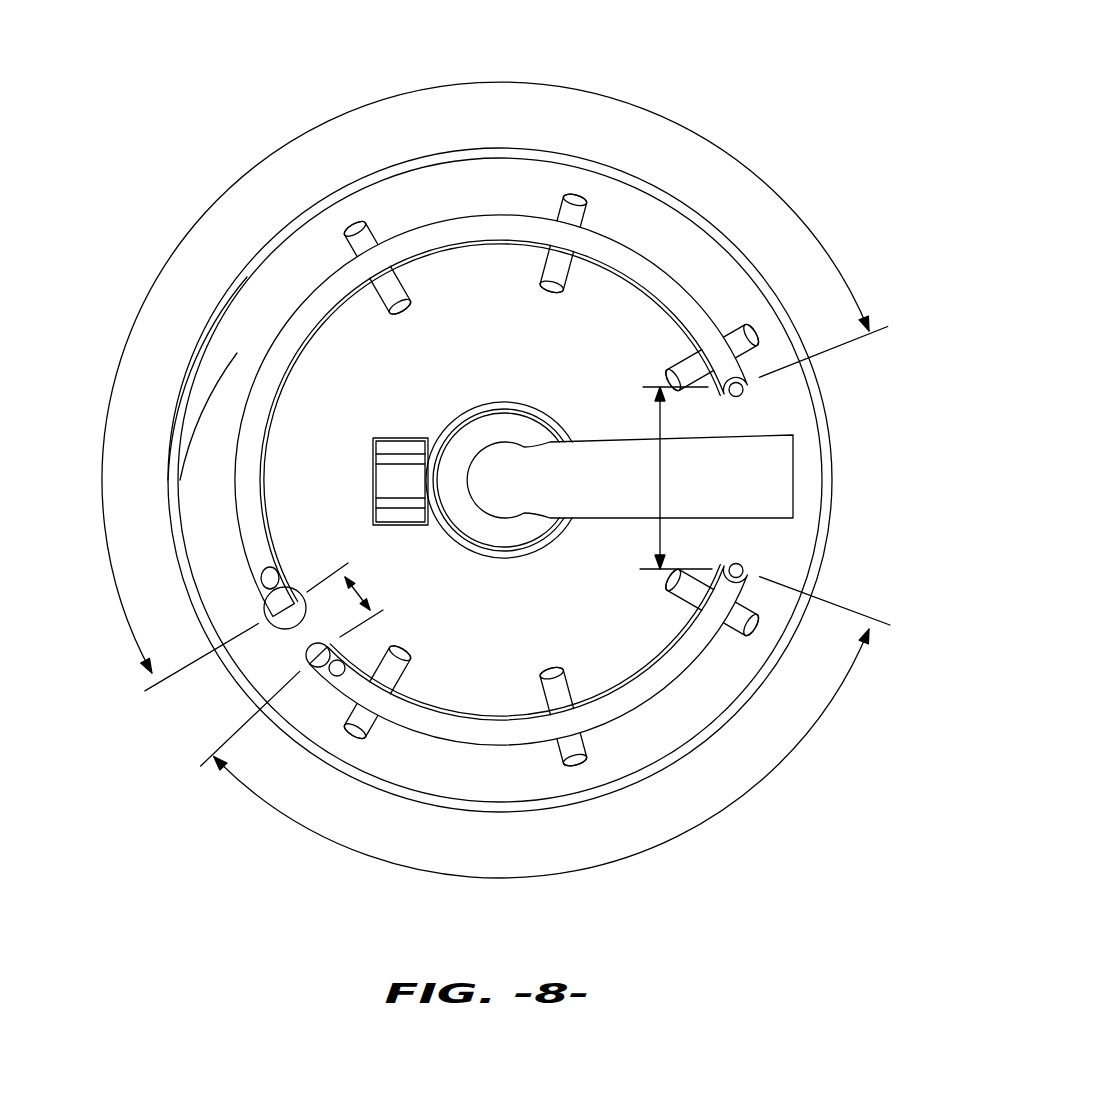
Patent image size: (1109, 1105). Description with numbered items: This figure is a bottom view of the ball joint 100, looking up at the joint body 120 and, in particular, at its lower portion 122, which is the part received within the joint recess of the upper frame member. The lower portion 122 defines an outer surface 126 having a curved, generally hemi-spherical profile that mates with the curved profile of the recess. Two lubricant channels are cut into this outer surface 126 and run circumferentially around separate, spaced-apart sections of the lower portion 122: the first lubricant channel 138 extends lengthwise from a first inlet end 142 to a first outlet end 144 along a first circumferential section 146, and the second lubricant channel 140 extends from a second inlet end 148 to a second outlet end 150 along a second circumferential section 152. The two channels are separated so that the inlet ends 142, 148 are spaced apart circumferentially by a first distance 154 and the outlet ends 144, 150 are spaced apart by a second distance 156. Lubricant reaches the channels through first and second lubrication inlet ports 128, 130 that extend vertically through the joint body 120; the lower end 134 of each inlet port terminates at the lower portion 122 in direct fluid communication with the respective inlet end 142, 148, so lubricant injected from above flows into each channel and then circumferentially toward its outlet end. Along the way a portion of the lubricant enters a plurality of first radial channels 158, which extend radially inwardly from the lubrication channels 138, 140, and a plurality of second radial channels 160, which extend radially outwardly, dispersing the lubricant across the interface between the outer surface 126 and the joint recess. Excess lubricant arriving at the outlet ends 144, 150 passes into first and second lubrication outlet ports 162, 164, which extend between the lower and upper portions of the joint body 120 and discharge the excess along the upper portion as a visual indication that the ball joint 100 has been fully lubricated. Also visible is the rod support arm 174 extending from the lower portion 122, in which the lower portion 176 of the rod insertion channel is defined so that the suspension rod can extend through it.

The ball joint 100 is at (240, 120).
The joint body 120 is at (412, 158).
The lower portion 122 is at (247, 277).
The outer surface 126 is at (237, 353).
The first lubrication inlet port 128 is at (280, 568).
The second lubrication inlet port 130 is at (338, 643).
The lower end 134 is at (248, 668).
The first lubricant channel 138 is at (285, 398).
The second lubricant channel 140 is at (440, 708).
The first inlet end 142 is at (262, 555).
The first outlet end 144 is at (762, 367).
The first circumferential section 146 is at (565, 82).
The second inlet end 148 is at (343, 680).
The second outlet end 150 is at (733, 590).
The second circumferential section 152 is at (640, 862).
The first distance 154 is at (358, 590).
The second distance 156 is at (653, 430).
The first radial channels 158 is at (408, 292).
The second radial channels 160 is at (378, 233).
The first lubrication outlet port 162 is at (752, 398).
The second lubrication outlet port 164 is at (750, 533).
The rod support arm 174 is at (488, 397).
The lower portion of the rod insertion channel 176 is at (448, 437).